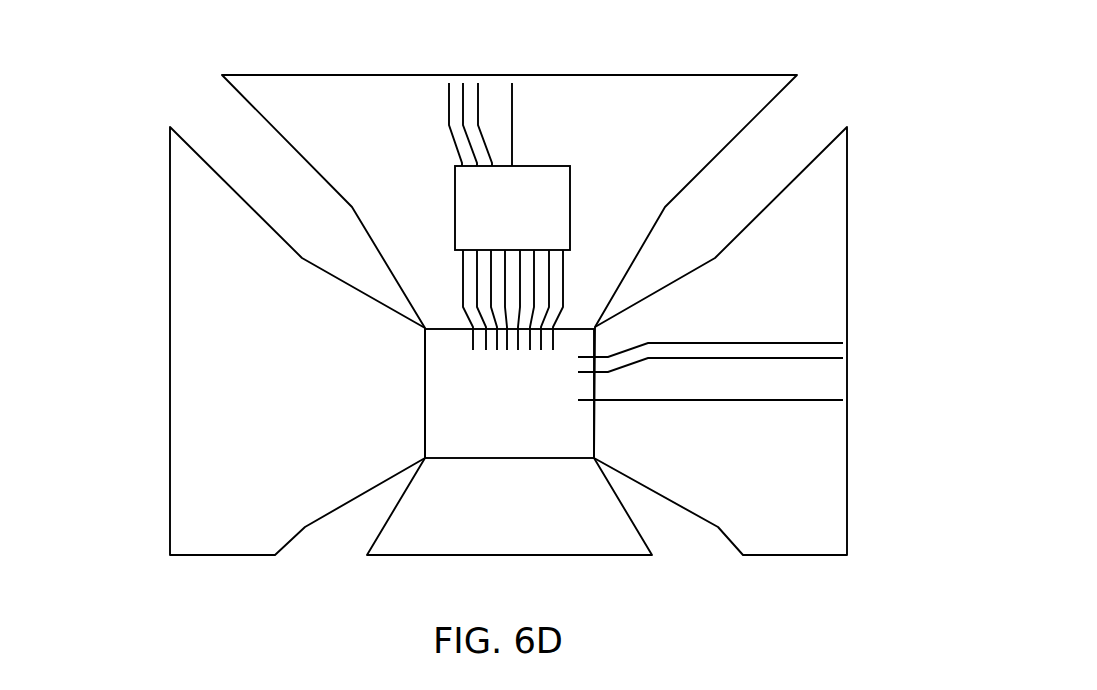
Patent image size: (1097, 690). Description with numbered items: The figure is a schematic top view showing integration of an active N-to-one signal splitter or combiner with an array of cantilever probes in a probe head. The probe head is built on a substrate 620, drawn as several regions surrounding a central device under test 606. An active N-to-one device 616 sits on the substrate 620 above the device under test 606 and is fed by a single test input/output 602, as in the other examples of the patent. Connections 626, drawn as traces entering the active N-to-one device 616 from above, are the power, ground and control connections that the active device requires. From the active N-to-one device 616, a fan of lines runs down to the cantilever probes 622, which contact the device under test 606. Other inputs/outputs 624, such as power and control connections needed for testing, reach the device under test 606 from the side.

The single test input/output 602 is at (512, 98).
The device under test 606 is at (534, 417).
The active N:1 device 616 is at (534, 222).
The substrate for the probe head 620 is at (372, 127).
The cantilever probes 622 is at (448, 338).
The other inputs/outputs to device under test 624 is at (729, 433).
The power/ground/control connections 626 is at (461, 56).